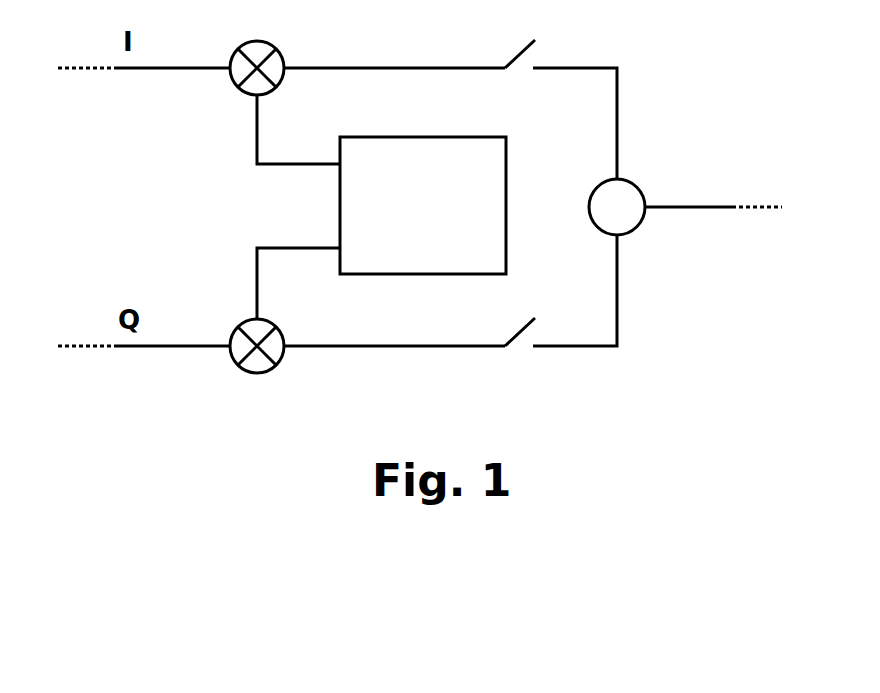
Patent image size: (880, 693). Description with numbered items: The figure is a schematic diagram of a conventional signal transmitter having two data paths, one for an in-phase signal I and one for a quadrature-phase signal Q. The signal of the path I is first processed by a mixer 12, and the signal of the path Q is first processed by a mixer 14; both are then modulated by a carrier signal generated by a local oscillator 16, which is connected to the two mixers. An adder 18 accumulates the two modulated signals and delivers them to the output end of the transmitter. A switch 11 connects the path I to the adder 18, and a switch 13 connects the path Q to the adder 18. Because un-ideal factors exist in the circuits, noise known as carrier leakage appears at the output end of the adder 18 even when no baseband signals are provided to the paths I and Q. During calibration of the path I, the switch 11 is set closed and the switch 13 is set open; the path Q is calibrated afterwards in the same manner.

The switch 11 is at (521, 52).
The mixer 12 is at (233, 52).
The switch 13 is at (521, 330).
The mixer 14 is at (233, 330).
The local oscillator 16 is at (507, 137).
The adder 18 is at (636, 185).